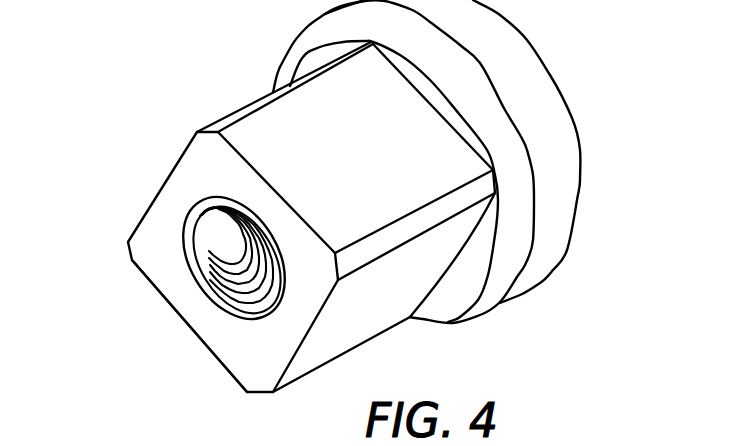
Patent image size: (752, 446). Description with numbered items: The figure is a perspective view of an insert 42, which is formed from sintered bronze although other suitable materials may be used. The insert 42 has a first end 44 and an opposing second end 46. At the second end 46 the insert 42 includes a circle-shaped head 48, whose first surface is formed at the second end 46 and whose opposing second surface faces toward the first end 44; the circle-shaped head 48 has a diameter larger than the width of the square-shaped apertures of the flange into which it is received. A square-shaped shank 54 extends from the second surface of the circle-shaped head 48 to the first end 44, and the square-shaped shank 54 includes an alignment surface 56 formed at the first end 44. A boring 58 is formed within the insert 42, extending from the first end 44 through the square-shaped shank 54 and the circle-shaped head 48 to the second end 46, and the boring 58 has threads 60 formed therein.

The insert 42 is at (137, 105).
The first end 44 is at (210, 352).
The second end 46 is at (571, 122).
The circle-shaped head 48 is at (503, 60).
The square-shaped shank 54 is at (278, 118).
The alignment surface 56 is at (155, 247).
The boring 58 is at (218, 256).
The threads 60 is at (221, 289).